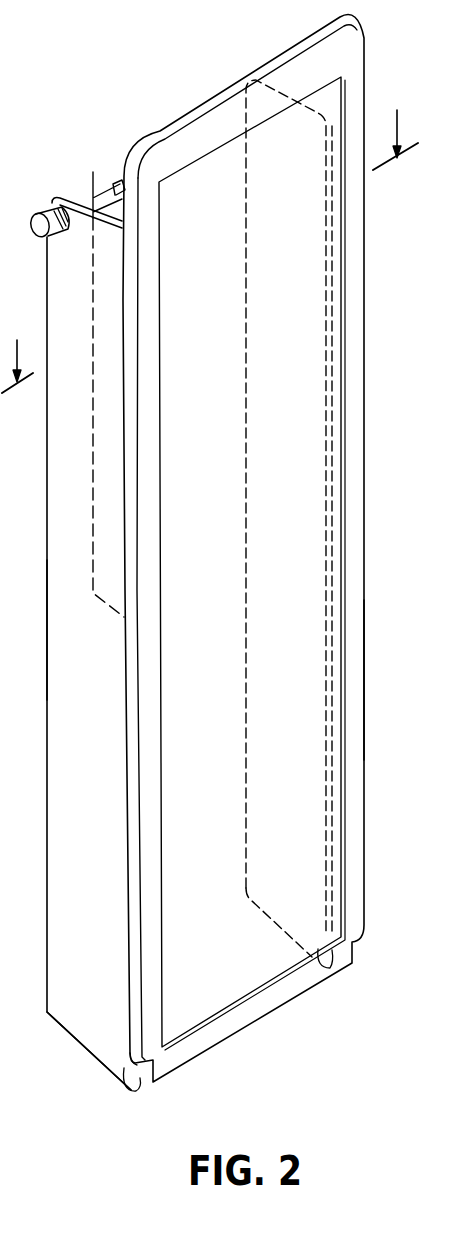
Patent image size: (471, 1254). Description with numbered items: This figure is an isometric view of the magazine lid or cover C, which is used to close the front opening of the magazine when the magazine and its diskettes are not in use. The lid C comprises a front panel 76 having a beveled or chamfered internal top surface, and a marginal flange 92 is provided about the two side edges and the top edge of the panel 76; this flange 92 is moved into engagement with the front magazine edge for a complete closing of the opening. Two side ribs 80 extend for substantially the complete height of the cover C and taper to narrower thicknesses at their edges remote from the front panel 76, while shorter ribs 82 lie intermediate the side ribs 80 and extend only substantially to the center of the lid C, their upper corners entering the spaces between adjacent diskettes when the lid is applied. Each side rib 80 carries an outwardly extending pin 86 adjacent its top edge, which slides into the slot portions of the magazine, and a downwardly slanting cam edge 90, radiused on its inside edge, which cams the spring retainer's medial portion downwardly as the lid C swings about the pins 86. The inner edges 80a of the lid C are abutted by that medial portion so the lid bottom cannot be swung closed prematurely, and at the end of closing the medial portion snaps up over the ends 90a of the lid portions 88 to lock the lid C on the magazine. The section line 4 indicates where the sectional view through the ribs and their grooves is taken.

The lid C is at (269, 548).
The section line 4- 4 is at (210, 264).
The front panel 76 is at (212, 505).
The side ribs 80 is at (69, 654).
The inner edges 80a is at (47, 626).
The ribs 82 is at (103, 168).
The pin 86 is at (72, 193).
The lid portions 88 is at (129, 1085).
The cam edge 90 is at (89, 1062).
The ends 90a is at (351, 993).
The marginal flange 92 is at (387, 680).